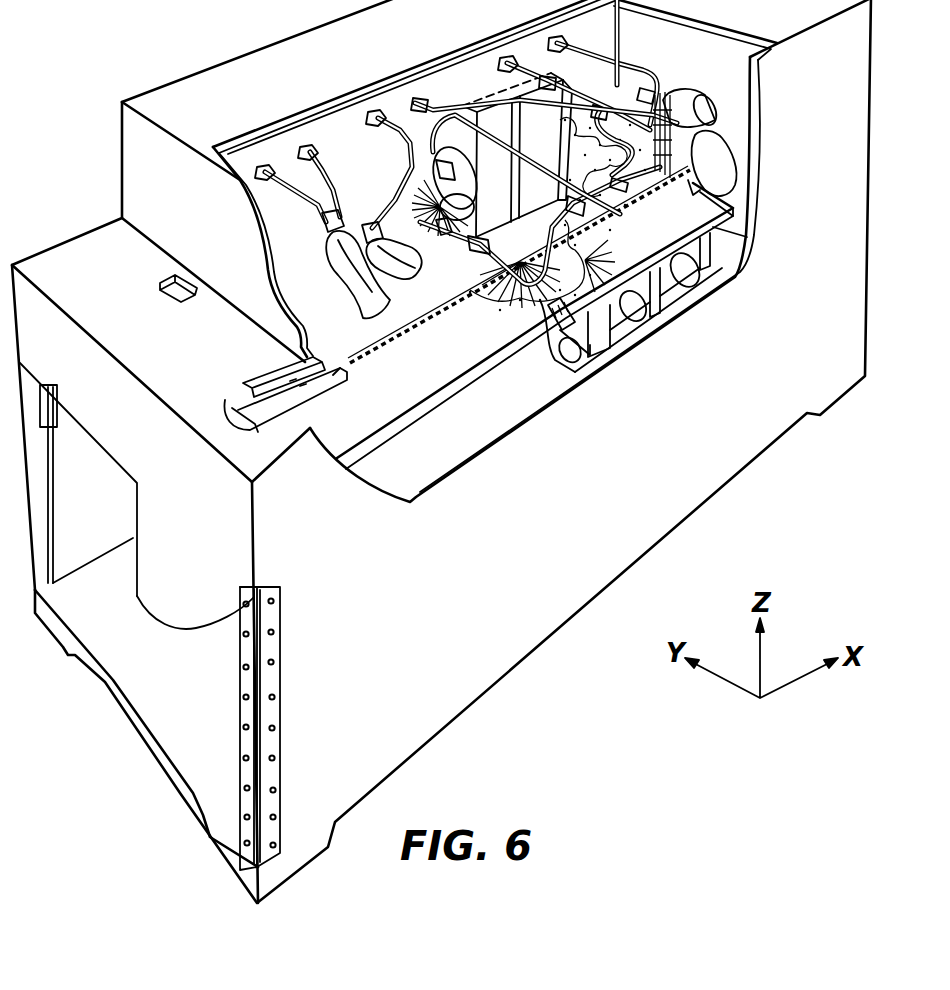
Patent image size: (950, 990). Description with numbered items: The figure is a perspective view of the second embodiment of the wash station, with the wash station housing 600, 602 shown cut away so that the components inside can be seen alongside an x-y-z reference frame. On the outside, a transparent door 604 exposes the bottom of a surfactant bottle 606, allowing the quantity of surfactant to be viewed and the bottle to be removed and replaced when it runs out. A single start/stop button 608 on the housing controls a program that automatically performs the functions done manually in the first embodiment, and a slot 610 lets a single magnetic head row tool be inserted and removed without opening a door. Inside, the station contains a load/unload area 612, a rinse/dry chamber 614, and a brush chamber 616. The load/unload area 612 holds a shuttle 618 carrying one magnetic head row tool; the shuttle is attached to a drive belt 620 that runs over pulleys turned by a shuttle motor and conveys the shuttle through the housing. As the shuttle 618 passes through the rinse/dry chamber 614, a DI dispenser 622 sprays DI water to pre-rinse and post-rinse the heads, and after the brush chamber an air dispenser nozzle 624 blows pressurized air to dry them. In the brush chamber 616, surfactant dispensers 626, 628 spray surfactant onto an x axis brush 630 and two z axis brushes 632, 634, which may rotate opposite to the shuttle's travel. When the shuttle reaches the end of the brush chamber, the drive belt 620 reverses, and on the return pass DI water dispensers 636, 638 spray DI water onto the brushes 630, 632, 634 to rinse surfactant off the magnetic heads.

The wash station housing 600 is at (513, 686).
The wash station housing 602 is at (572, 607).
The transparent door 604 is at (162, 763).
The surfactant bottle 606 is at (218, 617).
The start/stop button 608 is at (168, 278).
The slot 610 is at (272, 365).
The load/unload area 612 is at (382, 418).
The rinse/dry chamber 614 is at (312, 140).
The brush chamber 616 is at (373, 108).
The shuttle 618 is at (310, 405).
The drive belt 620 is at (362, 360).
The DI dispenser 622 is at (412, 275).
The air dispenser nozzle 624 is at (333, 263).
The surfactant dispenser 626 is at (457, 240).
The surfactant dispenser 628 is at (627, 98).
The x axis brush 630 is at (622, 182).
The z axis brush 632 is at (548, 292).
The z axis brush 634 is at (413, 173).
The DI water dispenser 636 is at (720, 160).
The DI water dispenser 638 is at (417, 173).